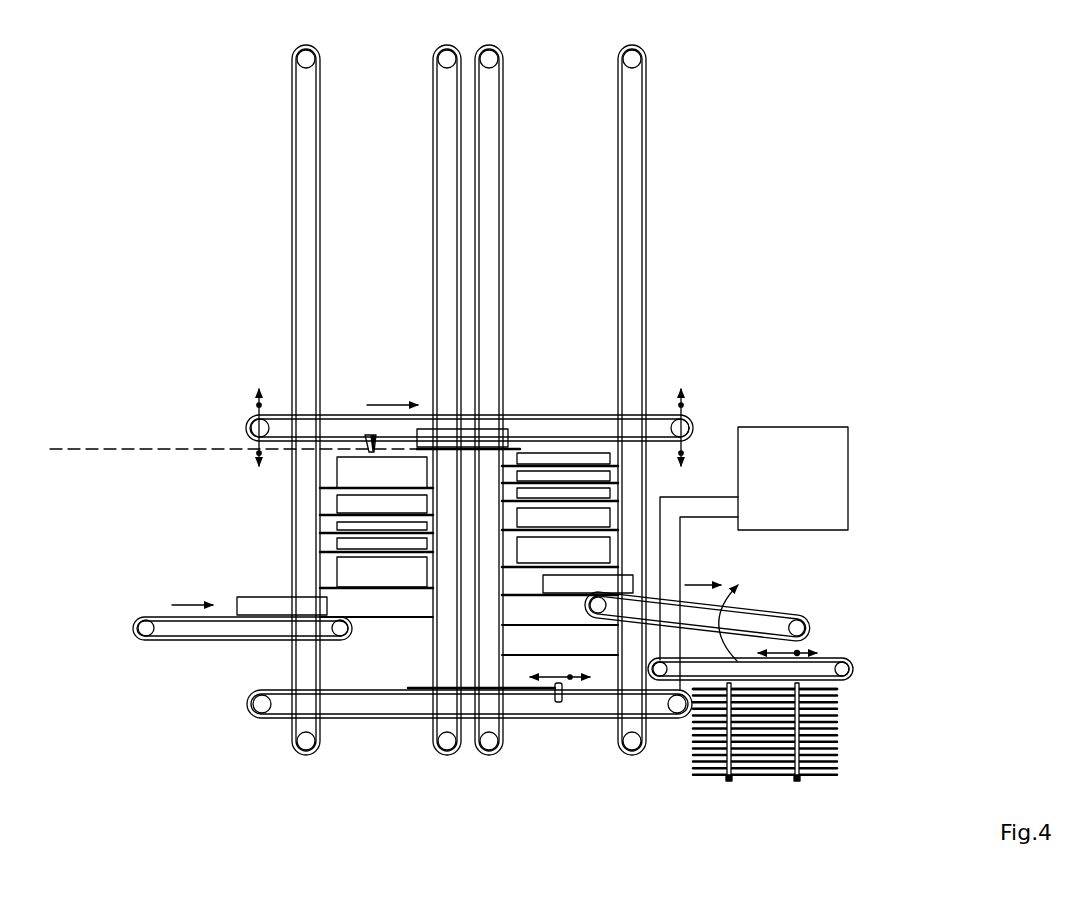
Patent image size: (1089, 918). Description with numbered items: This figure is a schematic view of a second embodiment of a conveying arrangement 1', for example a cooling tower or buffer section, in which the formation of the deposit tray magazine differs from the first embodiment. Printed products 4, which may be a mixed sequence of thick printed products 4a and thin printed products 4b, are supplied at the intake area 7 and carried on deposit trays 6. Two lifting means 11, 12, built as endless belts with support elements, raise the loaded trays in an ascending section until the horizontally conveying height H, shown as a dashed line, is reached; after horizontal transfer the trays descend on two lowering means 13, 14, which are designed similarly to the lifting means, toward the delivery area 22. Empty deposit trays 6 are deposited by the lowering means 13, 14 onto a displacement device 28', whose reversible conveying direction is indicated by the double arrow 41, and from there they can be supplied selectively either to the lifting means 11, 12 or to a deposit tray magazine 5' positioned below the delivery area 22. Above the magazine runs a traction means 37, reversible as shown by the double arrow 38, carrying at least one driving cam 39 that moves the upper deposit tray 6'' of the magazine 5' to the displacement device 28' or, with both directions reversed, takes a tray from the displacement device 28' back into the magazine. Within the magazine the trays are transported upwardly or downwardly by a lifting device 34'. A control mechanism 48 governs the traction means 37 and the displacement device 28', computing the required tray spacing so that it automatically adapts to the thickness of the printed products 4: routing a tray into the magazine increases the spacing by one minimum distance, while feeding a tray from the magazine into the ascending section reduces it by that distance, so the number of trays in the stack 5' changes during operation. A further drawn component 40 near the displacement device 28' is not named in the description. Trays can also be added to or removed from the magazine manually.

The conveying arrangement 1' is at (778, 182).
The printed products 4 is at (245, 597).
The thick printed products 4a is at (347, 469).
The thin printed products 4b is at (598, 455).
The deposit tray magazine 5' is at (817, 757).
The deposit trays 6 is at (811, 739).
The upper deposit tray 6'' is at (817, 682).
The intake area 7 is at (152, 615).
The lifting means 11 is at (319, 176).
The lifting means 12 is at (434, 176).
The lowering means 13 is at (502, 176).
The lowering means 14 is at (619, 175).
The delivery area 22 is at (789, 609).
The displacement device 28' is at (447, 685).
The lifting device 34' is at (786, 764).
The traction means 37 is at (860, 656).
The double arrow 38 is at (797, 653).
The driving cam 39 is at (675, 686).
The pusher bar 40 is at (555, 700).
The double arrow 41 is at (562, 702).
The control mechanism 48 is at (793, 427).
The horizontally conveying height H is at (67, 440).